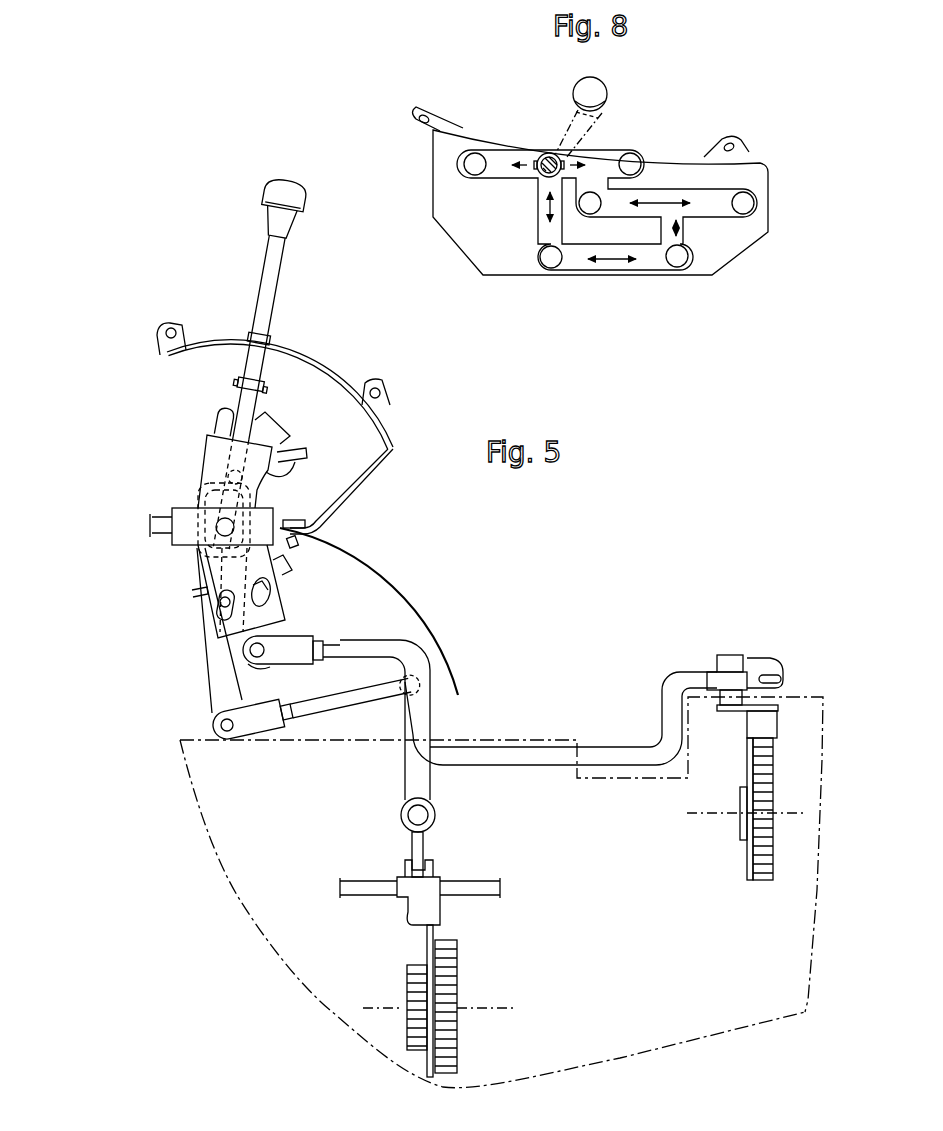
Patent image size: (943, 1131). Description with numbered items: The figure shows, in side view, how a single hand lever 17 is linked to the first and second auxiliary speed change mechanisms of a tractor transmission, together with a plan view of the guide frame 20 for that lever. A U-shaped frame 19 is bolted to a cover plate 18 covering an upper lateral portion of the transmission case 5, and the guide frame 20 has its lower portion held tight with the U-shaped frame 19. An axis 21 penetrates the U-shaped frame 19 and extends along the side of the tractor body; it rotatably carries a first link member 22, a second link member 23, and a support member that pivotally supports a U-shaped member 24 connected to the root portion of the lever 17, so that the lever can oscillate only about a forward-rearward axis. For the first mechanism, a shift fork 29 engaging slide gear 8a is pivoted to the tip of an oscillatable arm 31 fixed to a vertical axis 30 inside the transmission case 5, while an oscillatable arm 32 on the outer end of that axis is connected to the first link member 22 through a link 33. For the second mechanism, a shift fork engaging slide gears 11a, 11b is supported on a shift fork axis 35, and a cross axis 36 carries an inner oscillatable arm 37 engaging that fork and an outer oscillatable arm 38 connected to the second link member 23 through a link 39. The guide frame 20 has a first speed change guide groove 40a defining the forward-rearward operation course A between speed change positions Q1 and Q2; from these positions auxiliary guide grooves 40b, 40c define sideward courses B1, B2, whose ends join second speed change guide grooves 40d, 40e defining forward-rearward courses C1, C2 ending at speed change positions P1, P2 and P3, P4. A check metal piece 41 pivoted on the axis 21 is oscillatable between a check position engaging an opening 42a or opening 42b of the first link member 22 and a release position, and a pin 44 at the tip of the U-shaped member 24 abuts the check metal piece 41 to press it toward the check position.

In FIG. 5, the transmission case 5 is at (282, 950).
In FIG. 5, the slide gear 8a is at (760, 880).
In FIG. 5, the slide gear 11a is at (455, 1055).
In FIG. 5, the slide gear 11b is at (413, 1053).
In FIG. 8, the hand lever 17 is at (549, 152).
In FIG. 5, the hand lever 17 is at (269, 222).
In FIG. 5, the cover plate 18 is at (425, 618).
In FIG. 5, the U-shaped frame 19 is at (275, 517).
In FIG. 8, the guide frame 20 is at (433, 152).
In FIG. 5, the guide frame 20 is at (318, 363).
In FIG. 5, the axis 21 is at (221, 523).
In FIG. 5, the first link member 22 is at (279, 626).
In FIG. 5, the second link member 23 is at (203, 688).
In FIG. 5, the U-shaped member 24 is at (205, 458).
In FIG. 5, the shift fork 29 is at (745, 767).
In FIG. 5, the vertical axis 30 is at (708, 692).
In FIG. 5, the oscillatable arm 31 is at (757, 712).
In FIG. 5, the oscillatable arm 32 is at (758, 664).
In FIG. 5, the link 33 is at (594, 746).
In FIG. 5, the shift fork axis 35 is at (355, 880).
In FIG. 5, the cross axis 36 is at (435, 817).
In FIG. 5, the oscillatable arm 37 is at (411, 841).
In FIG. 5, the oscillatable arm 38 is at (432, 683).
In FIG. 5, the link 39 is at (345, 702).
In FIG. 8, the first speed change guide groove 40a is at (645, 260).
In FIG. 8, the auxiliary guide groove 40b is at (670, 225).
In FIG. 8, the auxiliary guide groove 40c is at (546, 233).
In FIG. 8, the second speed change guide groove 40d is at (705, 201).
In FIG. 8, the second speed change guide groove 40e is at (500, 171).
In FIG. 5, the check metal piece 41 is at (221, 601).
In FIG. 5, the opening 42a is at (273, 598).
In FIG. 5, the opening 42b is at (227, 614).
In FIG. 5, the pin 44 is at (270, 578).
In FIG. 8, the first speed change operation course A is at (604, 265).
In FIG. 8, the auxiliary operation course B1 is at (684, 228).
In FIG. 8, the auxiliary operation course B2 is at (548, 208).
In FIG. 8, the second speed change operation course C1 is at (662, 200).
In FIG. 8, the second speed change operation course C2 is at (518, 163).
In FIG. 8, the speed change position P1 is at (757, 203).
In FIG. 8, the speed change position P2 is at (592, 190).
In FIG. 8, the speed change position P3 is at (643, 151).
In FIG. 8, the speed change position P4 is at (476, 150).
In FIG. 8, the speed change position Q1 is at (676, 268).
In FIG. 8, the speed change position Q2 is at (550, 270).